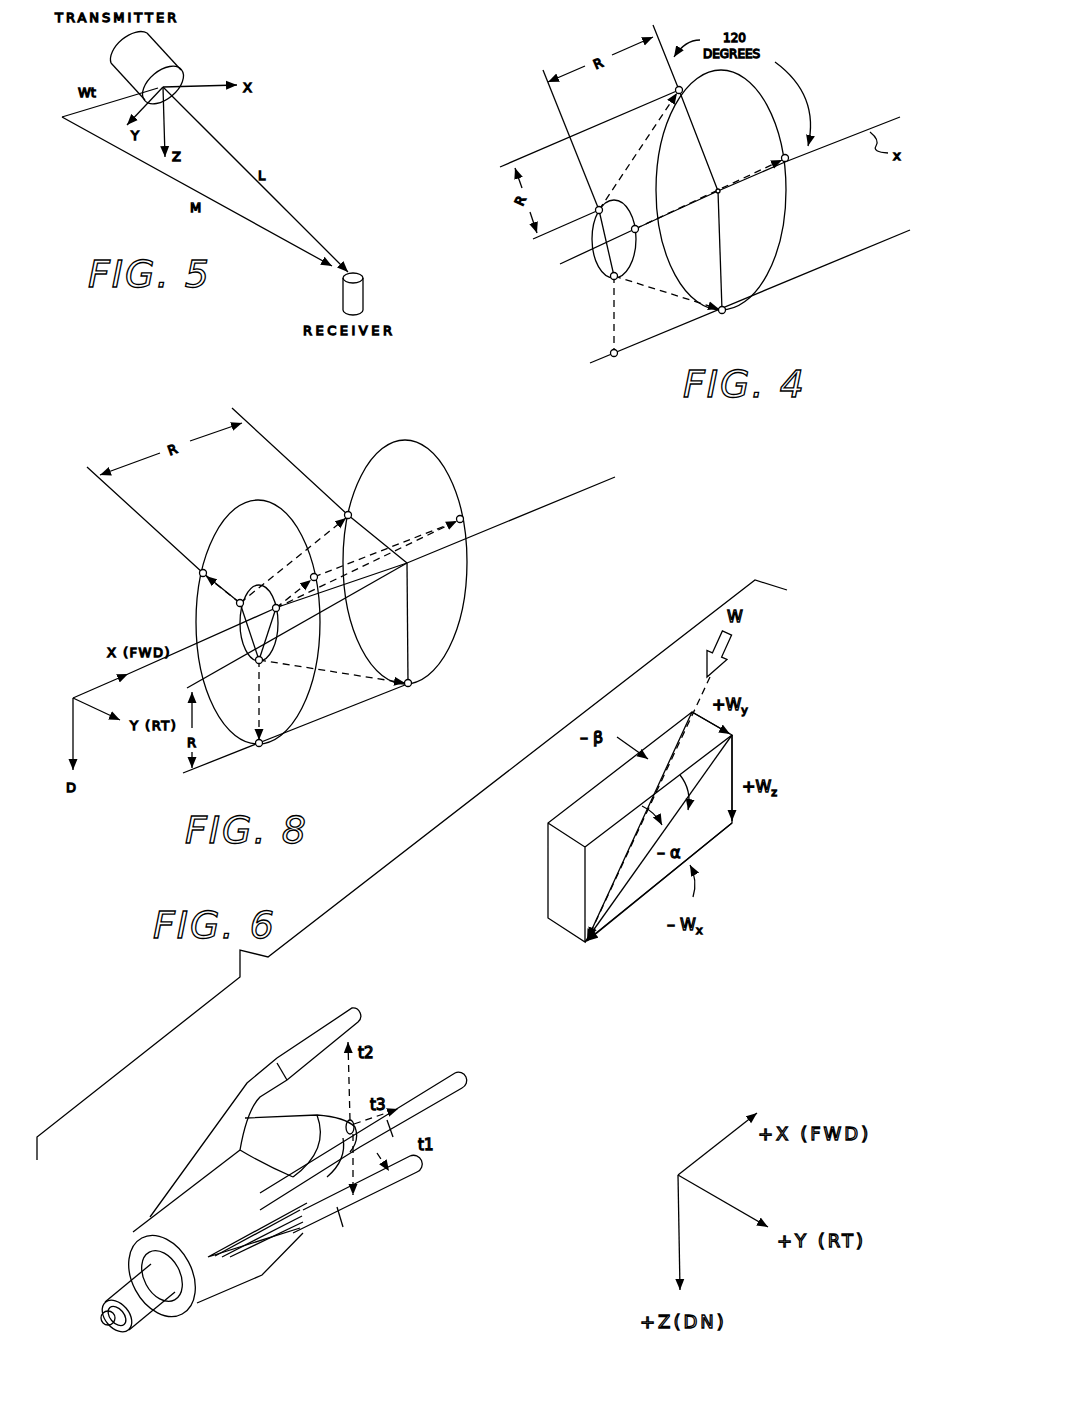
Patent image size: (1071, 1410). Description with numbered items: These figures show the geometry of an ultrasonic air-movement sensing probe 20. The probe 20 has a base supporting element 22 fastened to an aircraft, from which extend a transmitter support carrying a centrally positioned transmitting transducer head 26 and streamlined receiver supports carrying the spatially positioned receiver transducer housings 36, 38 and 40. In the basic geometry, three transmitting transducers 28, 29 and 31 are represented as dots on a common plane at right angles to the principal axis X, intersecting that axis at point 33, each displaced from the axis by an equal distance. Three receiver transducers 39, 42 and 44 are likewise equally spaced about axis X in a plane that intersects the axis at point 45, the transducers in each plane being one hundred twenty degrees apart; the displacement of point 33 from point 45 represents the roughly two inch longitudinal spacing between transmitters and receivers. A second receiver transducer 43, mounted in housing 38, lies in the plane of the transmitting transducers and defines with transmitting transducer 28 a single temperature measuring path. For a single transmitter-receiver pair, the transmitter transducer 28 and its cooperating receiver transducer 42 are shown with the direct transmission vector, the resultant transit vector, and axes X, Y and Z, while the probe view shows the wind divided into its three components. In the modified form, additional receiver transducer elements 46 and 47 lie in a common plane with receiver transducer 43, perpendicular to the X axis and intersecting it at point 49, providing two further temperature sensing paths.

In FIG. 6, the probe 20 is at (297, 1173).
In FIG. 6, the base supporting element 22 is at (177, 1225).
In FIG. 6, the transmitting transducer head 26 is at (350, 1121).
In FIG. 5, the transmitting transducer 28 is at (173, 51).
In FIG. 4, the transmitting transducer 28 is at (611, 278).
In FIG. 8, the transmitting transducer 28 is at (261, 663).
In FIG. 4, the transmitting transducer 29 is at (596, 208).
In FIG. 8, the transmitting transducer 29 is at (240, 599).
In FIG. 4, the transmitting transducer 31 is at (636, 225).
In FIG. 8, the transmitting transducer 31 is at (276, 604).
In FIG. 4, the point 33 is at (595, 247).
In FIG. 6, the receiver transducer housing 36 is at (460, 1085).
In FIG. 6, the receiver transducer housing 38 is at (410, 1173).
In FIG. 4, the receiver transducer 39 is at (676, 90).
In FIG. 8, the receiver transducer 39 is at (351, 514).
In FIG. 6, the receiver transducer housing 40 is at (307, 1037).
In FIG. 5, the receiver transducer 42 is at (364, 290).
In FIG. 4, the receiver transducer 42 is at (725, 311).
In FIG. 8, the receiver transducer 42 is at (410, 686).
In FIG. 4, the second receiver transducer 43 is at (617, 355).
In FIG. 8, the second receiver transducer 43 is at (262, 745).
In FIG. 4, the receiver transducer 44 is at (782, 156).
In FIG. 8, the receiver transducer 44 is at (463, 517).
In FIG. 4, the point 45 is at (722, 194).
In FIG. 8, the additional receiver transducer element 46 is at (200, 574).
In FIG. 8, the additional receiver transducer element 47 is at (315, 573).
In FIG. 8, the point 49 is at (242, 630).